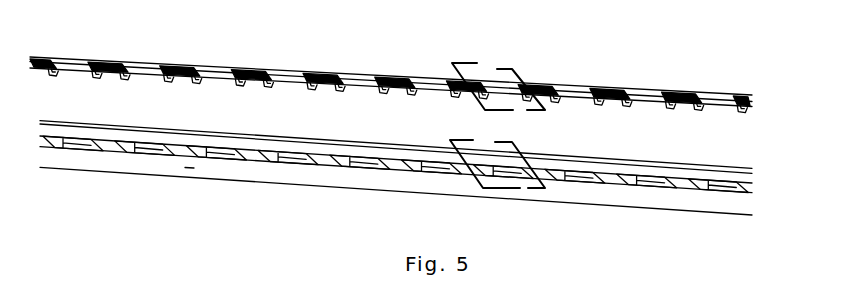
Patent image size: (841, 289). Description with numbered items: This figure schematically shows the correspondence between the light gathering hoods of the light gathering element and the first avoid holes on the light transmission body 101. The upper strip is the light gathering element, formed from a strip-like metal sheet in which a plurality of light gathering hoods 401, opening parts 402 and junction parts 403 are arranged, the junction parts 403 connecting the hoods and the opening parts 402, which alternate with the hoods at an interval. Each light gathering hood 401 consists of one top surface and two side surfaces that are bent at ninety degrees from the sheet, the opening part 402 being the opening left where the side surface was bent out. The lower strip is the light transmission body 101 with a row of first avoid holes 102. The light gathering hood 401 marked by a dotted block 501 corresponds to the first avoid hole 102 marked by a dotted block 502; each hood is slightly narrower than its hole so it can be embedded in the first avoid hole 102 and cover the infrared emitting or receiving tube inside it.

The light transmission body 101 is at (113, 160).
The first avoid hole 102 is at (80, 141).
The light gathering hood 401 is at (70, 60).
The opening part 402 is at (390, 90).
The junction part 403 is at (327, 75).
The dotted block 501 is at (497, 69).
The dotted block 502 is at (530, 189).